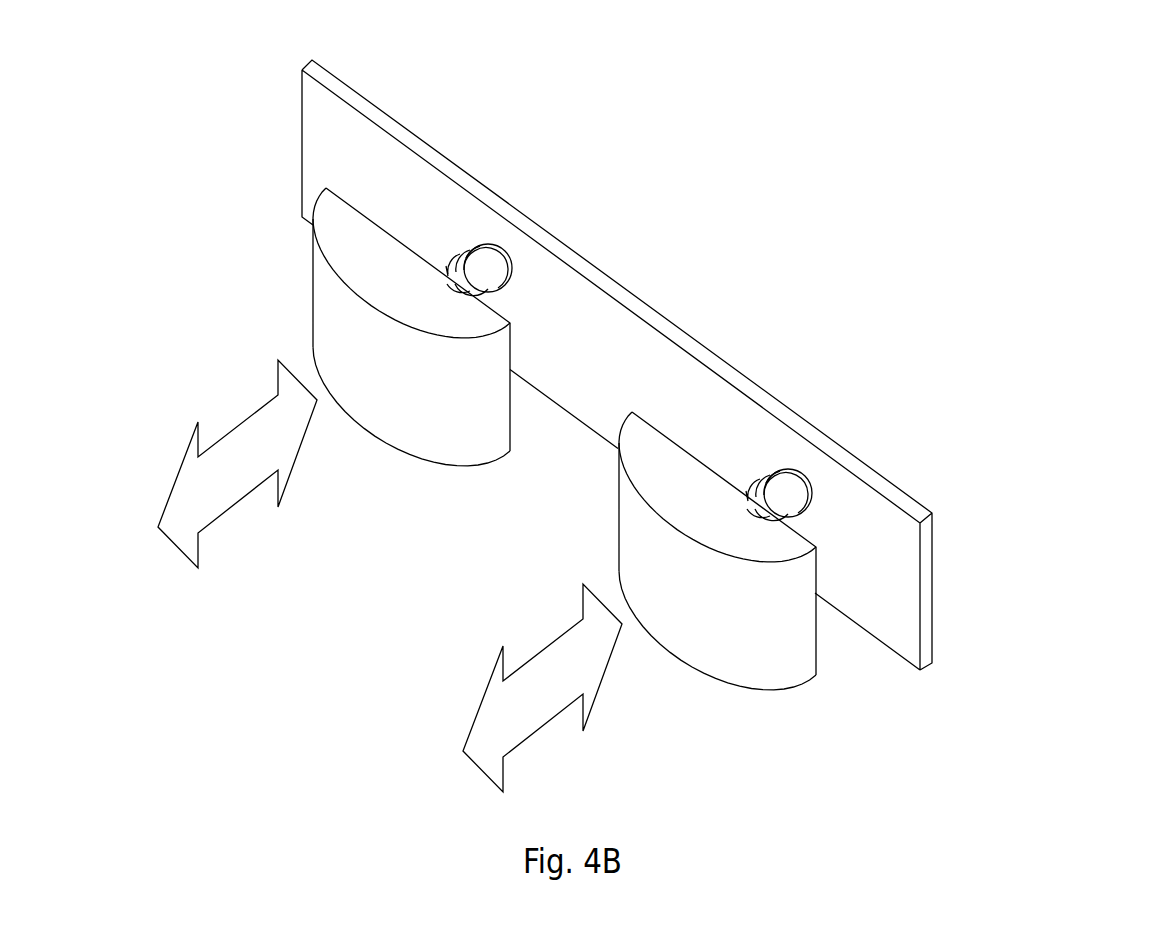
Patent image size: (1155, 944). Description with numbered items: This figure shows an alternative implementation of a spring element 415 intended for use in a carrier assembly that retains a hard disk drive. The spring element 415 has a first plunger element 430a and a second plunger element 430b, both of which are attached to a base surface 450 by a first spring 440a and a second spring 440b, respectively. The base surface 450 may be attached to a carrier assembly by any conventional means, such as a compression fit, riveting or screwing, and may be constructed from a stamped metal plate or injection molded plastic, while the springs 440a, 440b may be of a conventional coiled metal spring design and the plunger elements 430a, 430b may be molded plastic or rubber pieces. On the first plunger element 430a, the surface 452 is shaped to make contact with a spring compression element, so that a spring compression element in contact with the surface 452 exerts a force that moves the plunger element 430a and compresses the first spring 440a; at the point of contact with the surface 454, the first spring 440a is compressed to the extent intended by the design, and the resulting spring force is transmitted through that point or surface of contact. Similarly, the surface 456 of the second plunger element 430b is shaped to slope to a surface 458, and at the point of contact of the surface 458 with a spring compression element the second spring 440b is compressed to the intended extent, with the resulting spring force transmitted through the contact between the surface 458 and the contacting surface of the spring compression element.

The spring element 415 is at (655, 410).
The base surface 450 is at (568, 400).
The first plunger element 430a is at (349, 373).
The second plunger element 430b is at (639, 598).
The first spring 440a is at (497, 225).
The second spring 440b is at (807, 452).
The surface 452 is at (323, 297).
The surface 454 is at (392, 353).
The surface 456 is at (625, 543).
The surface 458 is at (678, 582).